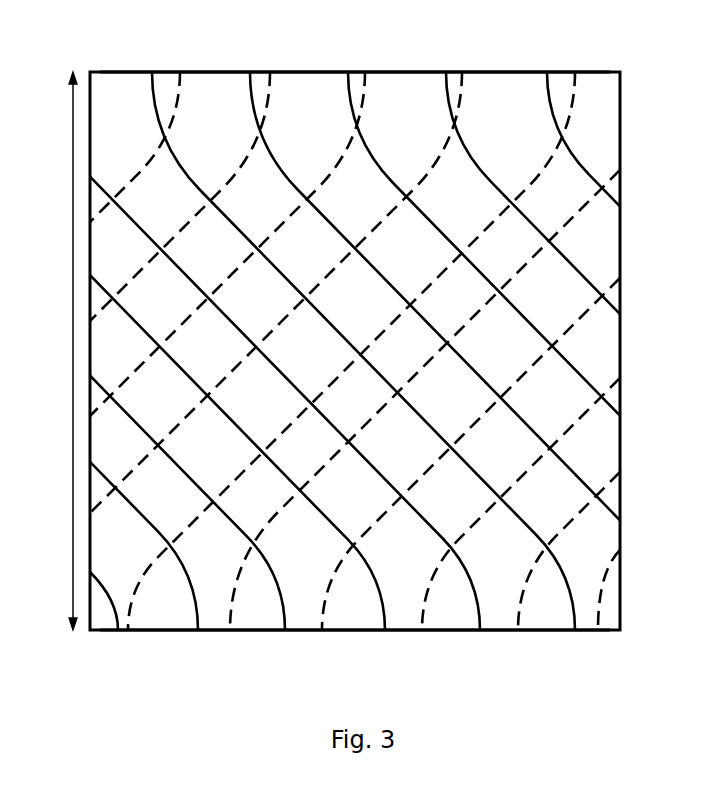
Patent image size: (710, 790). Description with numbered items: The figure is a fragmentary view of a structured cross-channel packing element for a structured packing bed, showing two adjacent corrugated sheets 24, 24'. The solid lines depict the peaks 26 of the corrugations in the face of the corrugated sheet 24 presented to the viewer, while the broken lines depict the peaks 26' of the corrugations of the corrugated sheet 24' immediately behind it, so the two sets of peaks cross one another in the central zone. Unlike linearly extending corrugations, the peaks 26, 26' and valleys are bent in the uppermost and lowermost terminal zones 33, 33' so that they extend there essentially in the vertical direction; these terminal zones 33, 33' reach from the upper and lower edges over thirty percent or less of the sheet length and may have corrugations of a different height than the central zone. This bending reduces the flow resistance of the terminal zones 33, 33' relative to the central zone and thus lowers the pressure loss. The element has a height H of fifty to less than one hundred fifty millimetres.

The corrugated sheet 24 is at (391, 351).
The corrugated sheet 24' is at (651, 322).
The peaks 26 is at (355, 351).
The peaks 26' is at (355, 351).
The terminal zone 33 is at (355, 653).
The terminal zone 33' is at (355, 55).
The height H is at (73, 112).